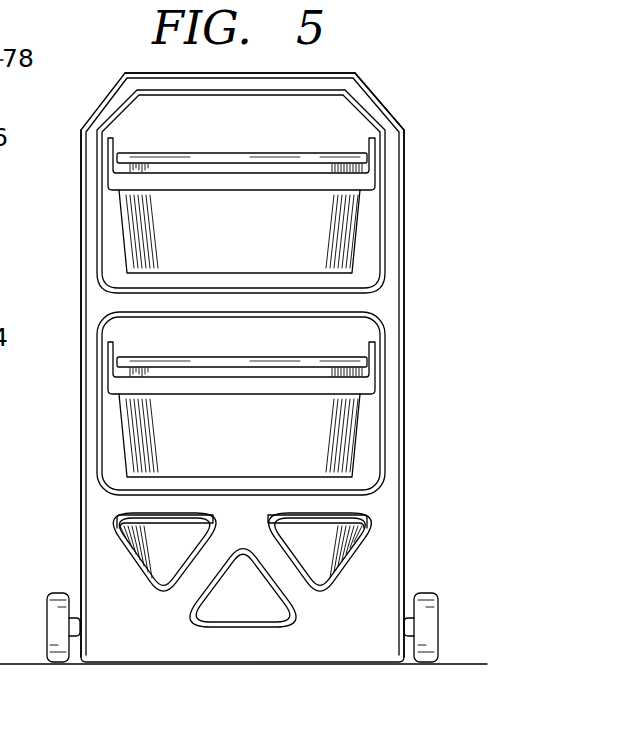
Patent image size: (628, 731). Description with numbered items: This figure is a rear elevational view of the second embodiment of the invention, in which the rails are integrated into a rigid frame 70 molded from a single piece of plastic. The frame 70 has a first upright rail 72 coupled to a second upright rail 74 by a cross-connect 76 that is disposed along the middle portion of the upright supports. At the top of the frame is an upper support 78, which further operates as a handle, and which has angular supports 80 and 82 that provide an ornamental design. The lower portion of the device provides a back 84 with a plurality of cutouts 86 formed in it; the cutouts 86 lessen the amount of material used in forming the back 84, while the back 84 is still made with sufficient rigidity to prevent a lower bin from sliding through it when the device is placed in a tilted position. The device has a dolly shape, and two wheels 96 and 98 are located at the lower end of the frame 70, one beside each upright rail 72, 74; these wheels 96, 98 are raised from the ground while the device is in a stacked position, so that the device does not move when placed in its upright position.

The rigid frame 70 is at (254, 375).
The first upright rail 72 is at (80, 442).
The second upright rail 74 is at (404, 437).
The cross-connect 76 is at (347, 288).
The upper support 78 is at (310, 73).
The angular support 80 is at (386, 112).
The angular support 82 is at (122, 108).
The back 84 is at (358, 582).
The cutouts 86 is at (247, 615).
The wheel 96 is at (46, 615).
The wheel 98 is at (440, 630).